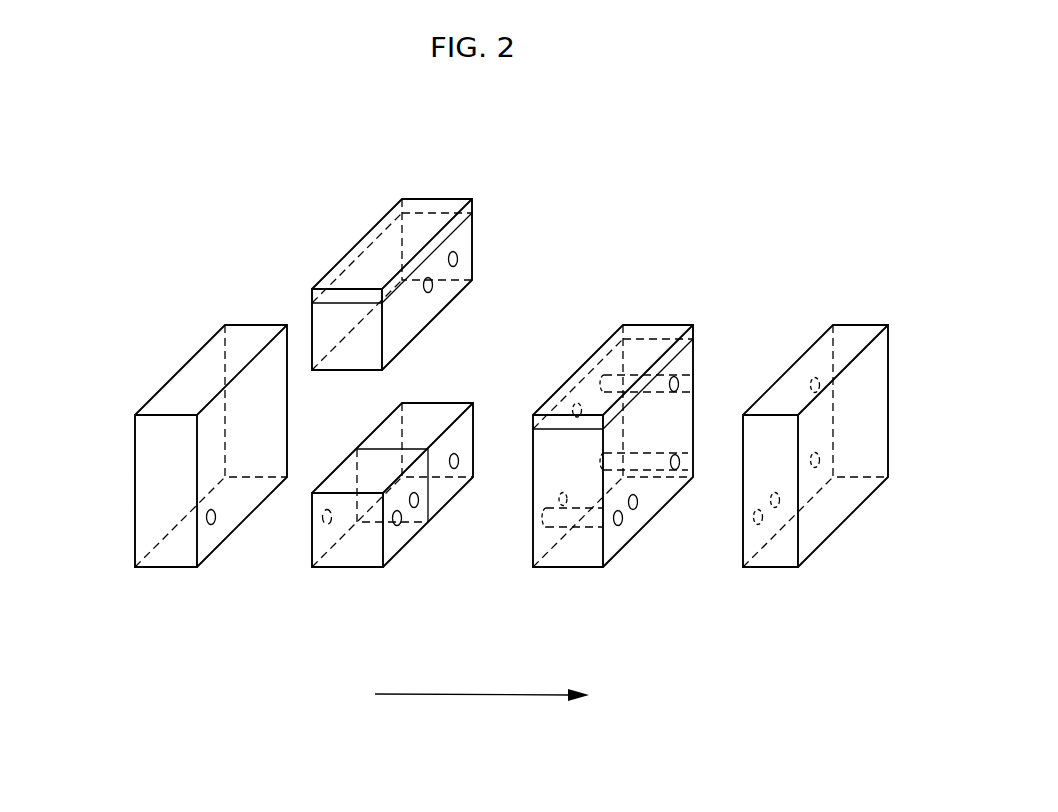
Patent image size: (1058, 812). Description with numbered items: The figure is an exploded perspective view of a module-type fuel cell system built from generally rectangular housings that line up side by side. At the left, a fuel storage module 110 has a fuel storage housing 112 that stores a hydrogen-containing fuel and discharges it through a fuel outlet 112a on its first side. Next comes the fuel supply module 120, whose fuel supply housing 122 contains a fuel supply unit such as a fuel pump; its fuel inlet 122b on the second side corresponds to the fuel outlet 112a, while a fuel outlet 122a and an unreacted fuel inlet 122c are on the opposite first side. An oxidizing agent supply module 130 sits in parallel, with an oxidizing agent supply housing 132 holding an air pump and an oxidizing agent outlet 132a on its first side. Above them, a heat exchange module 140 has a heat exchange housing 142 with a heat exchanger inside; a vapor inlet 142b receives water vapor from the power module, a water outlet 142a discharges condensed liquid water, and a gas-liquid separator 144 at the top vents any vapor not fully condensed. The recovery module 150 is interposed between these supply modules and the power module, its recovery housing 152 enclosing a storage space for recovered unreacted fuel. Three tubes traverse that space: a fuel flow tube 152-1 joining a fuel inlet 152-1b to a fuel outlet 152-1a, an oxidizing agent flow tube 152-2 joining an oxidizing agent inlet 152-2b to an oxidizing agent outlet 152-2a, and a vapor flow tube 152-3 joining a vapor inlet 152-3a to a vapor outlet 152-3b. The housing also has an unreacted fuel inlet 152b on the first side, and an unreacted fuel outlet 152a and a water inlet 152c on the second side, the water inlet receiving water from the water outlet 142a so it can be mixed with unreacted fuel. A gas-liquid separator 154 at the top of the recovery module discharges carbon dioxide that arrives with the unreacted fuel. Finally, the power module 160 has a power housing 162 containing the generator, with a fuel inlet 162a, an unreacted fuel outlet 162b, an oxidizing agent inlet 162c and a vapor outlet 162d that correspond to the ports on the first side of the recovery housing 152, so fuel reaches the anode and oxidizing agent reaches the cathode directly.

The fuel storage module 110 is at (190, 426).
The fuel storage housing 112 is at (140, 500).
The fuel outlet 112a is at (213, 527).
The fuel supply module 120 is at (382, 490).
The fuel supply housing 122 is at (340, 566).
The fuel outlet 122a is at (398, 525).
The fuel inlet 122b is at (307, 515).
The unreacted fuel inlet 122c is at (419, 505).
The oxidizing agent supply module 130 is at (433, 423).
The oxidizing agent supply housing 132 is at (393, 430).
The oxidizing agent outlet 132a is at (459, 463).
The heat exchange module 140 is at (434, 242).
The heat exchange housing 142 is at (463, 268).
The water outlet 142a is at (433, 286).
The vapor inlet 142b is at (458, 257).
The gas-liquid separator 144 is at (372, 228).
The recovery module 150 is at (614, 433).
The recovery housing 152 is at (562, 550).
The fuel flow tube 152-1 is at (583, 540).
The fuel outlet 152-1a is at (622, 526).
The fuel inlet 152-1b is at (532, 528).
The oxidizing agent flow tube 152-2 is at (663, 466).
The oxidizing agent outlet 152-2a is at (678, 468).
The oxidizing agent inlet 152-2b is at (600, 458).
The vapor flow tube 152-3 is at (615, 358).
The vapor inlet 152-3a is at (679, 384).
The vapor outlet 152-3b is at (600, 382).
The unreacted fuel outlet 152a is at (560, 497).
The unreacted fuel inlet 152b is at (637, 507).
The water inlet 152c is at (576, 404).
The gas-liquid separator 154 is at (670, 323).
The power module 160 is at (817, 405).
The power housing 162 is at (883, 362).
The fuel inlet 162a is at (755, 511).
The unreacted fuel outlet 162b is at (773, 493).
The oxidizing agent inlet 162c is at (812, 452).
The vapor outlet 162d is at (815, 377).